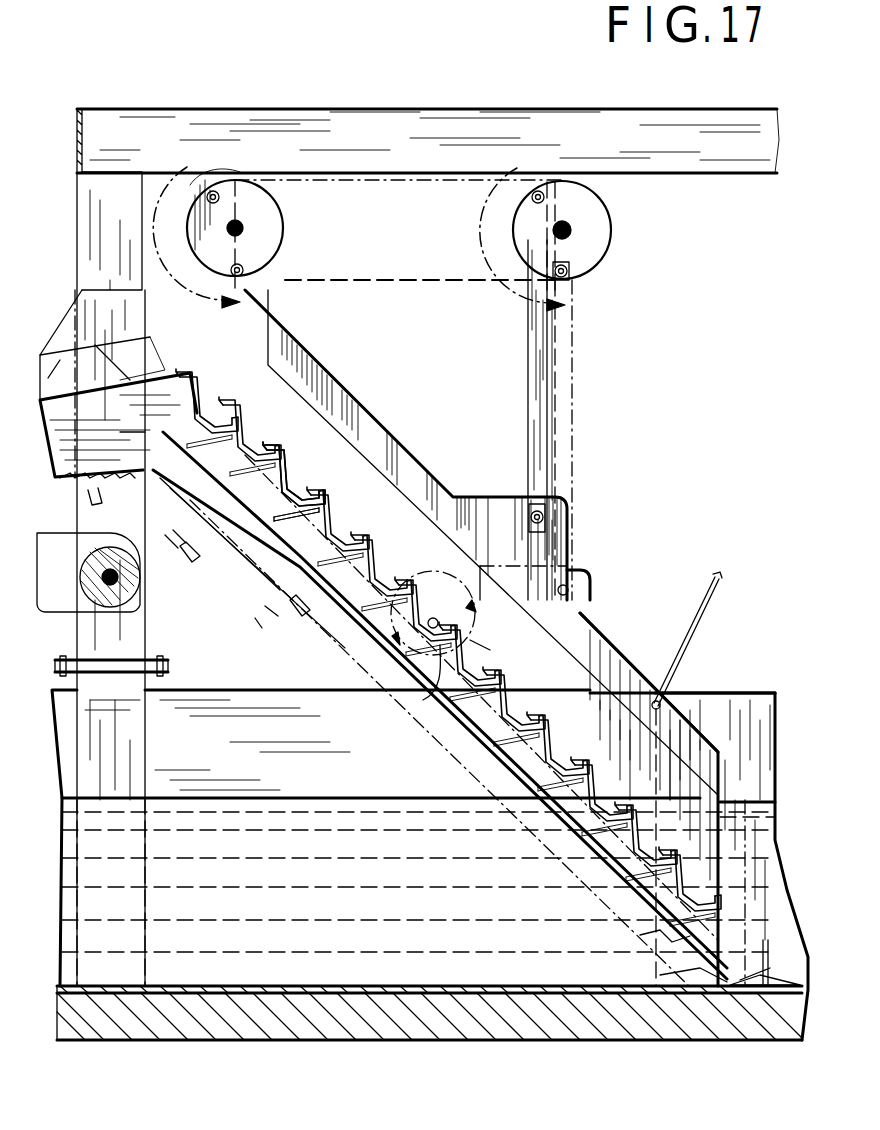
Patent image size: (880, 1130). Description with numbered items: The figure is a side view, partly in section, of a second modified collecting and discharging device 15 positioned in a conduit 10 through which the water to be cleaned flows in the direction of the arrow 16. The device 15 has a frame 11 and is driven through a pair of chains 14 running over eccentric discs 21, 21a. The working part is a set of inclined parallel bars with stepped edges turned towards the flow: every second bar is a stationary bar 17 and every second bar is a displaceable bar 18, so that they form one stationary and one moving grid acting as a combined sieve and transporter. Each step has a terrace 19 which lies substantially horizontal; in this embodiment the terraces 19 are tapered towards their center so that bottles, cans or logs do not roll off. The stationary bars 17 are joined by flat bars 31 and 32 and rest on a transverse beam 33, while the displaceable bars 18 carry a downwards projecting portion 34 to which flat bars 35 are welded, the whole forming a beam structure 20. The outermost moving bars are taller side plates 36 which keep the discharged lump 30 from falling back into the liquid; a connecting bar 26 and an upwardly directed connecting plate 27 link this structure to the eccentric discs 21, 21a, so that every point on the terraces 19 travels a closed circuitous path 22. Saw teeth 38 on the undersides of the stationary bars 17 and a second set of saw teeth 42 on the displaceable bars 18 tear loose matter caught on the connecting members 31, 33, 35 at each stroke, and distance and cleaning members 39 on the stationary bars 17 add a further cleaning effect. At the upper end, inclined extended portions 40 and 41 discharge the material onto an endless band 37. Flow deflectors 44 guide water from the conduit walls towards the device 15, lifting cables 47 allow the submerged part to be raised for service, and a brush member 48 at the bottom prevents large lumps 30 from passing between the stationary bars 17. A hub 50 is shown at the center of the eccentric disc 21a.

The conduit 10 is at (246, 690).
The frame 11 is at (96, 214).
The chain 14 is at (400, 280).
The collecting and discharging device 15 is at (600, 616).
The arrow indicating flow of water 16 is at (450, 872).
The stationary bar 17 is at (505, 700).
The displaceable bar 18 is at (298, 490).
The terrace 19 is at (200, 408).
The beam structure 20 is at (228, 598).
The eccentric disc 21 is at (578, 200).
The eccentric disc 21a is at (248, 198).
The closed circuitous path 22 is at (478, 652).
The connecting bar 26 is at (540, 355).
The connecting plate 27 is at (212, 178).
The lump 30 is at (433, 618).
The flat bar 31 is at (110, 480).
The flat bar 32 is at (690, 968).
The transverse beam 33 is at (92, 500).
The downwards projecting portion 34 is at (205, 520).
The flat bar 35 is at (186, 540).
The side plate 36 is at (368, 420).
The endless band 37 is at (62, 590).
The saw teeth 38 is at (216, 560).
The distance and cleaning member 39 is at (423, 700).
The extended portion 40 is at (55, 460).
The extended portion 41 is at (110, 352).
The saw teeth 42 is at (60, 362).
The flow deflector 44 is at (748, 704).
The lifting cable 47 is at (690, 626).
The brush member 48 is at (770, 958).
The shaft hub 50 is at (245, 226).